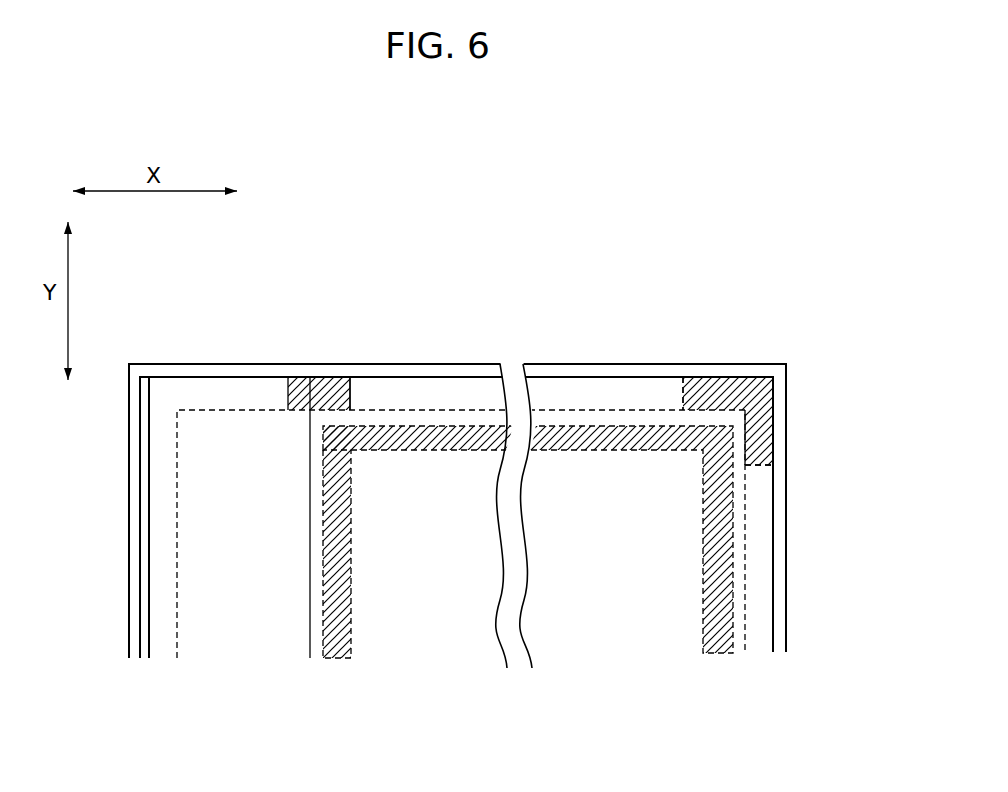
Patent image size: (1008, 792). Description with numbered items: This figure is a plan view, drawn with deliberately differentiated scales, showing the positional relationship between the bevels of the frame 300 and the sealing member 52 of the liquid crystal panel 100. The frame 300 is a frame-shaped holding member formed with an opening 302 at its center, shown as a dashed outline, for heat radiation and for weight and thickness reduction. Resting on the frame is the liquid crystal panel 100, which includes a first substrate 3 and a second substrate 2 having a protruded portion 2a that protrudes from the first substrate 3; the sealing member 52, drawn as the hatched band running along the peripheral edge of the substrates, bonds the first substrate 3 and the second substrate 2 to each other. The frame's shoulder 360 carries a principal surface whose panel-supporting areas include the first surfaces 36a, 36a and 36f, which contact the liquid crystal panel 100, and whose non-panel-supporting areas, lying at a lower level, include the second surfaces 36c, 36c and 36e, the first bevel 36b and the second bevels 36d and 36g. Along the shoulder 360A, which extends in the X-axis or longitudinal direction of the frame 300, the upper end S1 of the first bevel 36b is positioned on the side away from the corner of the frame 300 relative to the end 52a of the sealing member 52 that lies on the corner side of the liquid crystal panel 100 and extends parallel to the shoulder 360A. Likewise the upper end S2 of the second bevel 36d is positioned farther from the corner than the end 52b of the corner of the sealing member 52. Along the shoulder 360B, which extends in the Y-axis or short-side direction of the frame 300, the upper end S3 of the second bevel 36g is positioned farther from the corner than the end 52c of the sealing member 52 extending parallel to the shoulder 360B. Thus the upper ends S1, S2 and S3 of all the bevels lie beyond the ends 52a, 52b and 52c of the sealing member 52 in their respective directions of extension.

The liquid crystal panel 100 is at (178, 364).
The frame 300 is at (405, 377).
The shoulder 360 is at (267, 364).
The shoulder 360A is at (483, 364).
The shoulder 360B is at (777, 527).
The first surface 36a is at (447, 390).
The first bevel 36b is at (326, 390).
The second surface 36c is at (227, 386).
The second bevel 36d is at (722, 395).
The second surface 36e is at (160, 497).
The first surface 36f is at (753, 598).
The second bevel 36g is at (752, 446).
The upper end of the bevel S1 is at (360, 392).
The upper end of the bevel S2 is at (677, 395).
The upper end of the bevel S3 is at (767, 470).
The sealing member 52 is at (536, 533).
The end of the sealing member 52a is at (323, 453).
The end of the sealing member 52b is at (752, 418).
The end of the sealing member 52c is at (770, 385).
The opening 302 is at (183, 575).
The second substrate 2 is at (279, 551).
The protruded portion 2a is at (253, 632).
The first substrate 3 is at (424, 645).